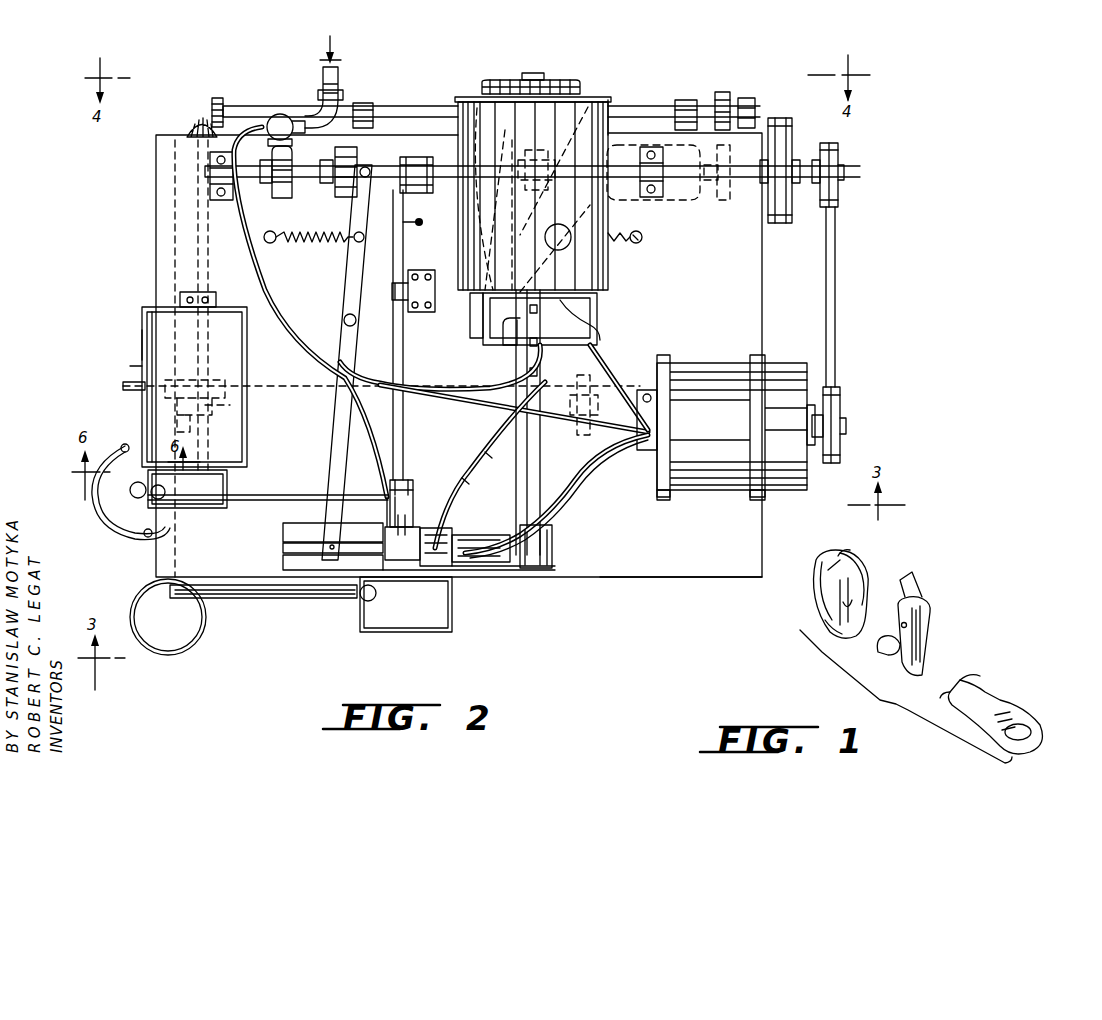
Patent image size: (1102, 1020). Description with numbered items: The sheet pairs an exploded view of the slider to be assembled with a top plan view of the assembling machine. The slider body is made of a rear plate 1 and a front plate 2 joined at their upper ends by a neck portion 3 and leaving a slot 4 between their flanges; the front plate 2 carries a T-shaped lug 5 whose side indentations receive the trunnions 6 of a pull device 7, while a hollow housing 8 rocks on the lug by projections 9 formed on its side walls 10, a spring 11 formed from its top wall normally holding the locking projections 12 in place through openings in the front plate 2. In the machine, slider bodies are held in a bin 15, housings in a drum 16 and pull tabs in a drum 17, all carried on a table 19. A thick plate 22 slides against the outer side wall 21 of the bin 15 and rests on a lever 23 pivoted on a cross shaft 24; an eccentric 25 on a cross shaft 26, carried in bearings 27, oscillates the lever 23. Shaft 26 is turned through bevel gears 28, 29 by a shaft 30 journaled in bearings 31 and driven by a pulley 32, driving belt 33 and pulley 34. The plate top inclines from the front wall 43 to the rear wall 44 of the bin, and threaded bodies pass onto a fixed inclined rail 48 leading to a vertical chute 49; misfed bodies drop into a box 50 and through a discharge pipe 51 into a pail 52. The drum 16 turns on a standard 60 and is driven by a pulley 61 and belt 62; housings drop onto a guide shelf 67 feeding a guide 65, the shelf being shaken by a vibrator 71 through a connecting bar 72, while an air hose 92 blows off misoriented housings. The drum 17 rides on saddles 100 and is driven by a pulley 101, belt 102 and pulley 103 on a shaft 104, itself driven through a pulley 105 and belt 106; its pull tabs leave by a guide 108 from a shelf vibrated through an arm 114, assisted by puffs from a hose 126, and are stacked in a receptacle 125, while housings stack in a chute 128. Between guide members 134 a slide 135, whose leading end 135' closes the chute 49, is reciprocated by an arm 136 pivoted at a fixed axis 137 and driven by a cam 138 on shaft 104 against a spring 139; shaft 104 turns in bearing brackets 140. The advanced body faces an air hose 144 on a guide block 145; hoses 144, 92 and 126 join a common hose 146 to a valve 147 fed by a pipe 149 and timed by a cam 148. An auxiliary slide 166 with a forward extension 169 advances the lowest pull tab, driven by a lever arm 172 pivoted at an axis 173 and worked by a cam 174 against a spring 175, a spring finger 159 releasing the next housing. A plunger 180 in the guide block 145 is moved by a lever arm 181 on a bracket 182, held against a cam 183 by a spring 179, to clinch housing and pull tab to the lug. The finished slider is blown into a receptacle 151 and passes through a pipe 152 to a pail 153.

In FIG. 1, the rear plate 1 is at (814, 596).
In FIG. 1, the front plate 2 is at (860, 562).
In FIG. 1, the neck portion 3 is at (843, 556).
In FIG. 1, the slot 4 is at (820, 609).
In FIG. 1, the lug 5 is at (868, 588).
In FIG. 1, the trunnions 6 is at (978, 676).
In FIG. 1, the pull device 7 is at (1018, 700).
In FIG. 1, the hollow housing 8 is at (928, 614).
In FIG. 1, the projections 9 is at (898, 630).
In FIG. 1, the side walls 10 is at (918, 590).
In FIG. 1, the spring 11 is at (928, 640).
In FIG. 1, the locking projections 12 is at (882, 650).
In FIG. 2, the bin 15 is at (136, 318).
In FIG. 2, the drum 16 is at (606, 100).
In FIG. 2, the drum 17 is at (688, 356).
In FIG. 2, the table 19 is at (620, 576).
In FIG. 2, the outer side wall 21 is at (140, 326).
In FIG. 2, the thick plate 22 is at (140, 368).
In FIG. 2, the lever 23 is at (297, 386).
In FIG. 2, the cross shaft 24 is at (570, 412).
In FIG. 2, the eccentric 25 is at (188, 368).
In FIG. 2, the cross shaft 26 is at (198, 259).
In FIG. 2, the bearings 27 is at (231, 410).
In FIG. 2, the bevel gear 28 is at (198, 120).
In FIG. 2, the bevel gear 29 is at (218, 98).
In FIG. 2, the shaft 30 is at (254, 108).
In FIG. 2, the bearings 31 is at (368, 103).
In FIG. 2, the pulley 32 is at (722, 92).
In FIG. 2, the driving belt 33 is at (728, 152).
In FIG. 2, the pulley 34 is at (724, 200).
In FIG. 2, the front wall 43 is at (228, 470).
In FIG. 2, the rear wall 44 is at (216, 314).
In FIG. 2, the fixed inclined rail 48 is at (290, 496).
In FIG. 2, the vertical chute 49 is at (378, 590).
In FIG. 2, the box 50 is at (205, 510).
In FIG. 2, the discharge pipe 51 is at (130, 493).
In FIG. 2, the pail 52 is at (132, 532).
In FIG. 2, the standard 60 is at (475, 100).
In FIG. 2, the pulley 61 is at (553, 80).
In FIG. 2, the belt 62 is at (565, 80).
In FIG. 2, the guide 65 is at (472, 474).
In FIG. 2, the guide shelf 67 is at (588, 100).
In FIG. 2, the vibrator 71 is at (600, 312).
In FIG. 2, the connecting bar 72 is at (502, 342).
In FIG. 2, the air hose 92 is at (592, 326).
In FIG. 2, the saddles 100 is at (665, 500).
In FIG. 2, the pulley 101 is at (840, 402).
In FIG. 2, the belt 102 is at (832, 335).
In FIG. 2, the pulley 103 is at (840, 166).
In FIG. 2, the shaft 104 is at (386, 166).
In FIG. 2, the pulley 105 is at (780, 118).
In FIG. 2, the belt 106 is at (796, 136).
In FIG. 2, the guide 108 is at (590, 460).
In FIG. 2, the arm 114 is at (622, 380).
In FIG. 2, the receptacle 125 is at (468, 563).
In FIG. 2, the hose 126 is at (558, 410).
In FIG. 2, the chute 128 is at (445, 535).
In FIG. 2, the guide members 134 is at (283, 526).
In FIG. 2, the slide 135 is at (313, 546).
In FIG. 2, the leading end 135' is at (354, 555).
In FIG. 2, the arm 136 is at (330, 436).
In FIG. 2, the fixed axis 137 is at (343, 321).
In FIG. 2, the cam 138 is at (345, 161).
In FIG. 2, the spring 139 is at (300, 236).
In FIG. 2, the bearing brackets 140 is at (220, 200).
In FIG. 2, the air hose 144 is at (386, 478).
In FIG. 2, the plunger housing 145 is at (413, 497).
In FIG. 2, the common hose 146 is at (276, 288).
In FIG. 2, the valve 147 is at (282, 114).
In FIG. 2, the cam 148 is at (290, 162).
In FIG. 2, the pipe 149 is at (335, 67).
In FIG. 2, the receptacle 151 is at (452, 622).
In FIG. 2, the pipe 152 is at (276, 598).
In FIG. 2, the pail 153 is at (165, 652).
In FIG. 2, the spring finger 159 is at (432, 565).
In FIG. 2, the auxiliary slide 166 is at (553, 538).
In FIG. 2, the forward extension 169 is at (515, 566).
In FIG. 2, the lever arm 172 is at (520, 511).
In FIG. 2, the axis 173 is at (480, 298).
In FIG. 2, the cam 174 is at (545, 150).
In FIG. 2, the spring 175 is at (630, 244).
In FIG. 2, the spring 179 is at (420, 220).
In FIG. 2, the plunger 180 is at (405, 480).
In FIG. 2, the lever arm 181 is at (404, 423).
In FIG. 2, the bracket 182 is at (424, 270).
In FIG. 2, the cam 183 is at (425, 157).